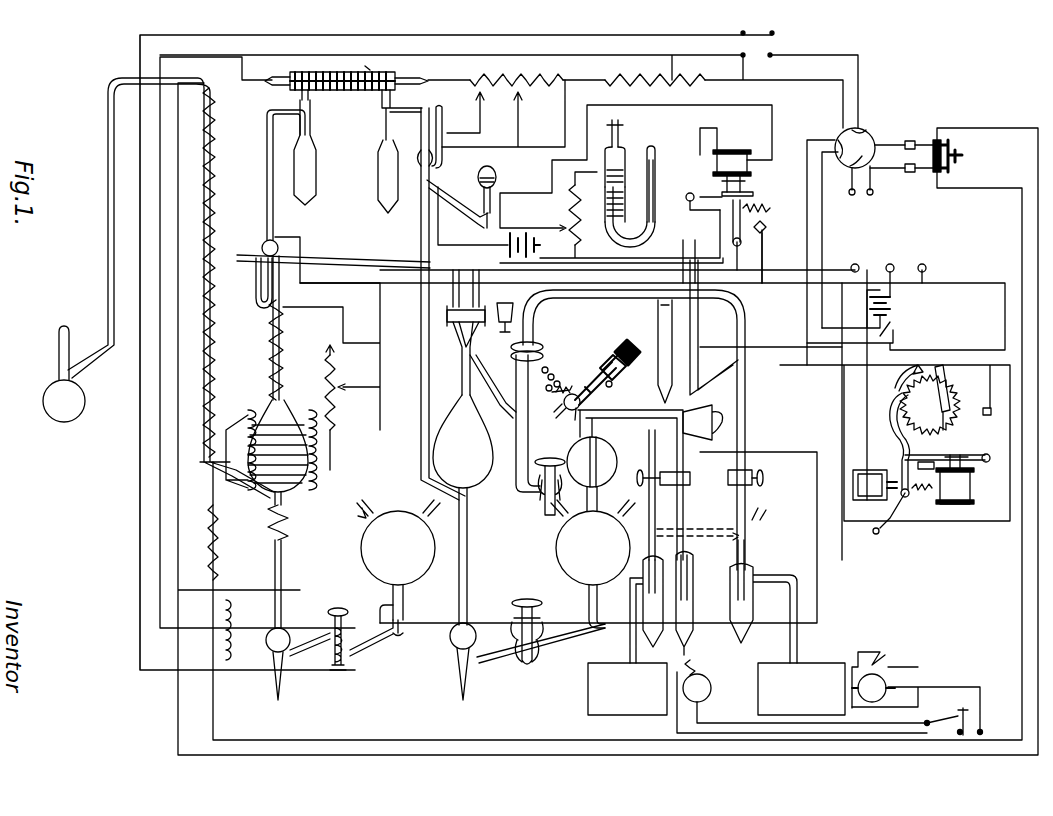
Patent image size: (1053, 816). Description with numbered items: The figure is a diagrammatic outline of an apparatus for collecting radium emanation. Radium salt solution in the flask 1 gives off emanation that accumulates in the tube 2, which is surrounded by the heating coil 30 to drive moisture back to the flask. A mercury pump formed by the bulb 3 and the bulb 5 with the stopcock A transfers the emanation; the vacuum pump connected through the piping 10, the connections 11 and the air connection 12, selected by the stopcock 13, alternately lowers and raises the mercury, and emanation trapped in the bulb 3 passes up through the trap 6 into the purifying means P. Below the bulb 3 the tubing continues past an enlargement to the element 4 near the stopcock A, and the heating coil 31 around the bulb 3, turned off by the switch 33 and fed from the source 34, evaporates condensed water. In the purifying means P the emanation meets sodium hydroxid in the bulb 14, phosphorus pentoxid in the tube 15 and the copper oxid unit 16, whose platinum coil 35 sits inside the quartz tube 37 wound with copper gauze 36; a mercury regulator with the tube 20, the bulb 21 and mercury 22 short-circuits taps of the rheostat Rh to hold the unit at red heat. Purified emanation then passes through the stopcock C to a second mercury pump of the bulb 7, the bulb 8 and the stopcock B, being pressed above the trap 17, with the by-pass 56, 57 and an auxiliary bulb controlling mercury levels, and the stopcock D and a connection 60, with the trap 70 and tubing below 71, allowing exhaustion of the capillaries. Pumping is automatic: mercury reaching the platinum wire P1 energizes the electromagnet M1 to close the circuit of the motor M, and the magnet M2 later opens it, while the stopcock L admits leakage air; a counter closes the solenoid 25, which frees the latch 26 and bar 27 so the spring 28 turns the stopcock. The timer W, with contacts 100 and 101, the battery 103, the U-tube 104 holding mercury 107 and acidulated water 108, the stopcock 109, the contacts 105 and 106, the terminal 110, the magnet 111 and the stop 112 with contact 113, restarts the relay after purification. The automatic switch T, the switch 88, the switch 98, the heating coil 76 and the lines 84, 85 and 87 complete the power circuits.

The flask 1 is at (64, 374).
The tube 2 is at (108, 215).
The bulb 3 is at (271, 446).
The bulb 4 is at (266, 644).
The bulb 5 is at (398, 573).
The trap 6 is at (254, 288).
The bulb 7 is at (463, 441).
The bulb 8 is at (593, 569).
The connecting piping 10 is at (630, 485).
The connections 11 is at (646, 603).
The air connection 12 is at (675, 495).
The stopcock 13 is at (620, 476).
The bulb 14 is at (322, 176).
The tube 15 is at (376, 197).
The copper oxid unit 16 is at (370, 60).
The trap 17 is at (458, 352).
The regulator tube 20 is at (442, 108).
The bulb 21 is at (418, 157).
The mercury 22 is at (444, 156).
The solenoid 25 is at (628, 349).
The latch 26 is at (606, 358).
The bar 27 is at (592, 395).
The spring 28 is at (593, 383).
The heating coil 30 is at (217, 356).
The heating coil 31 is at (284, 365).
The switch 33 is at (553, 389).
The source 34 is at (556, 364).
The platinum wire coil 35 is at (376, 94).
The copper gauze 36 is at (310, 96).
The quartz tube 37 is at (312, 70).
The by-pass 56 is at (492, 372).
The by-pass 57 is at (494, 404).
The connection 60 is at (698, 524).
The trap 70 is at (770, 610).
The tubing 71 is at (766, 518).
The heating coil 76 is at (343, 672).
The line 84 is at (868, 196).
The supply line 85 is at (572, 360).
The line 87 is at (848, 41).
The switch 88 is at (963, 157).
The switch 98 is at (952, 718).
The contact 100 is at (457, 199).
The contact 101 is at (466, 222).
The battery 103 is at (536, 240).
The U-tube 104 is at (628, 208).
The contact 105 is at (686, 201).
The arm 106 is at (752, 214).
The mercury 107 is at (603, 238).
The water 108 is at (616, 165).
The stopcock 109 is at (622, 123).
The terminal 110 is at (654, 153).
The magnet 111 is at (714, 168).
The stop 112 is at (769, 227).
The contact 113 is at (732, 227).
The purifying means P is at (346, 131).
The platinum wire P1 is at (283, 183).
The automatic switch T is at (866, 135).
The timer system W is at (610, 183).
The rheostat Rh is at (655, 90).
The motor M is at (693, 627).
The electromagnet M1 is at (955, 489).
The magnet M2 is at (875, 477).
The stopcock D is at (533, 343).
The valve E is at (548, 460).
The stopcock B is at (516, 604).
The stopcock A is at (328, 611).
The stopcock C is at (508, 317).
The stopcock L is at (703, 420).